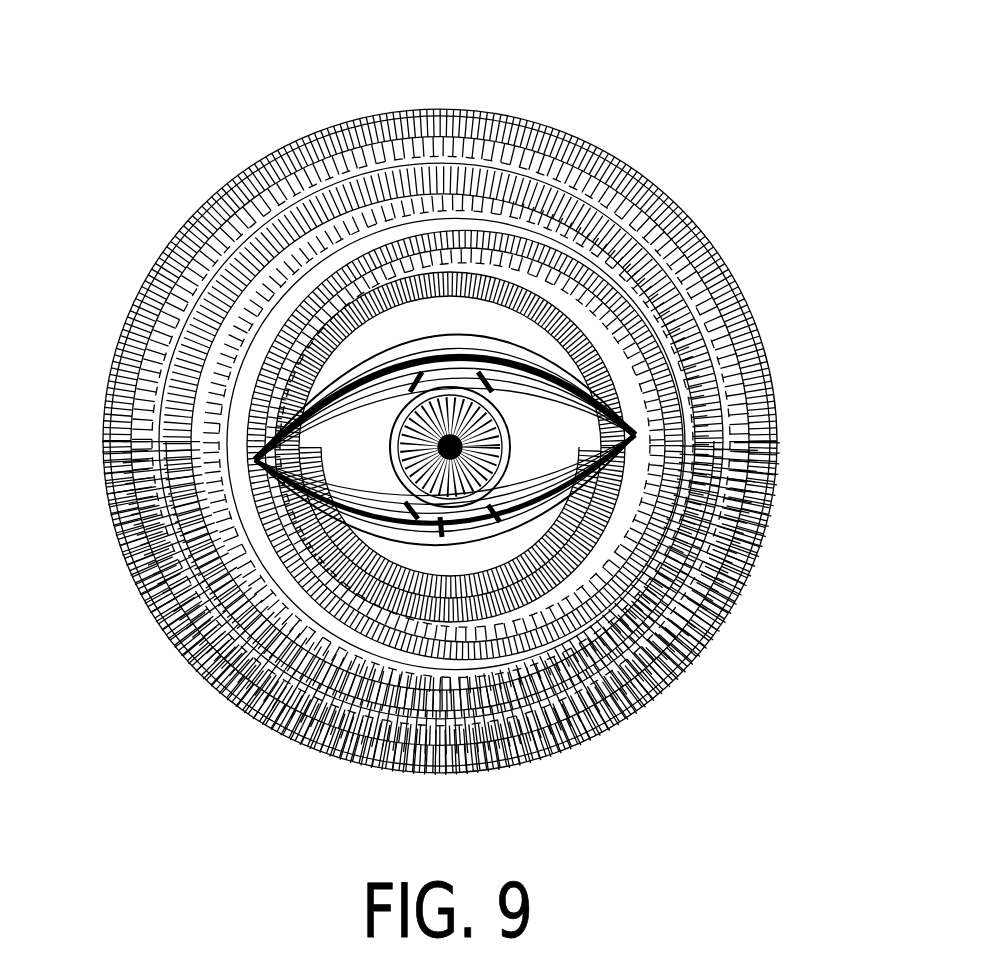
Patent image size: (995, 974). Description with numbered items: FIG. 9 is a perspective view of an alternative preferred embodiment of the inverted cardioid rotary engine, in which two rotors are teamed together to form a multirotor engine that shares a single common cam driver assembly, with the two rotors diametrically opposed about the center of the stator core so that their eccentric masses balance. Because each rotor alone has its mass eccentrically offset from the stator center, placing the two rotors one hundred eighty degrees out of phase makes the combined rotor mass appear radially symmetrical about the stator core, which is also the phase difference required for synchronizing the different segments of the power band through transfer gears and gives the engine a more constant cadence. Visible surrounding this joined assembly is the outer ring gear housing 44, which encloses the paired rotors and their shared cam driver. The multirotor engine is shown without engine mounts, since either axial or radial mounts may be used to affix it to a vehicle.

The outer ring gear housing 44 is at (348, 122).